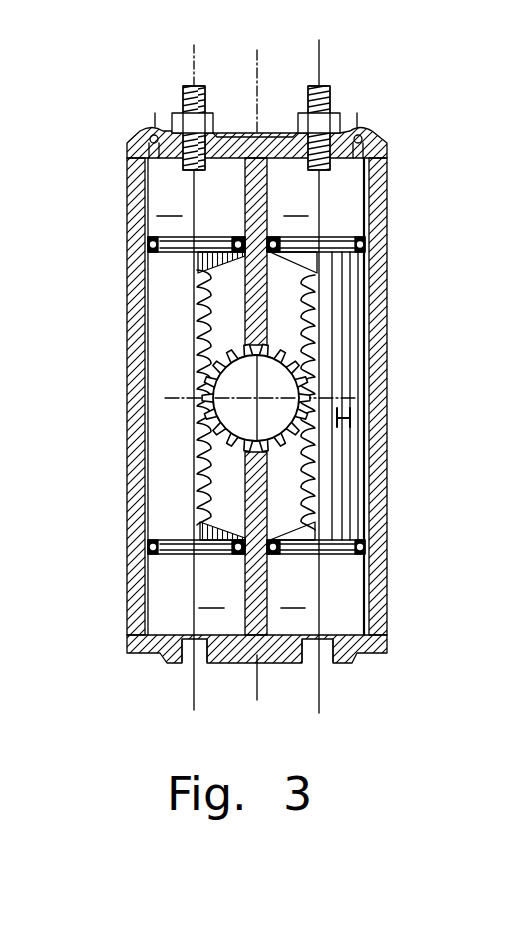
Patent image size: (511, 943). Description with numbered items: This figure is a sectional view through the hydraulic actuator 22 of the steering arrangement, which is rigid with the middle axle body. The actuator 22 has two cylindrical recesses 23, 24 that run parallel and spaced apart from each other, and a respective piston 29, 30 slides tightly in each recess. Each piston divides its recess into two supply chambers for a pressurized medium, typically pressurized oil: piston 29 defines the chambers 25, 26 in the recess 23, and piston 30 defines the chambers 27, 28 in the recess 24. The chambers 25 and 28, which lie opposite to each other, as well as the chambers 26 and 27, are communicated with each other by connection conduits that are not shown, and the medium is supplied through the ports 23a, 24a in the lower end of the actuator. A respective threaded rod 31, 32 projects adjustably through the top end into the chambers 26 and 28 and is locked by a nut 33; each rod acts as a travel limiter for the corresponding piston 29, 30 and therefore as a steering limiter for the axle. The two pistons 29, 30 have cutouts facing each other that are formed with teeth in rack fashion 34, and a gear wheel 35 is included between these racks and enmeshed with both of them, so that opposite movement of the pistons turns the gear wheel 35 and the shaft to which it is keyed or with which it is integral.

The hydraulic actuator 22 is at (390, 268).
The cylindrical recess 23 is at (366, 404).
The port 23a is at (318, 654).
The cylindrical recess 24 is at (147, 453).
The port 24a is at (207, 653).
The supply chamber 25 is at (316, 574).
The supply chamber 26 is at (316, 224).
The supply chamber 27 is at (196, 574).
The supply chamber 28 is at (196, 224).
The piston 29 is at (340, 346).
The piston 30 is at (165, 382).
The threaded rod 31 is at (327, 99).
The threaded rod 32 is at (197, 92).
The nut 33 is at (208, 124).
The rack teeth 34 is at (226, 340).
The gear wheel 35 is at (270, 410).